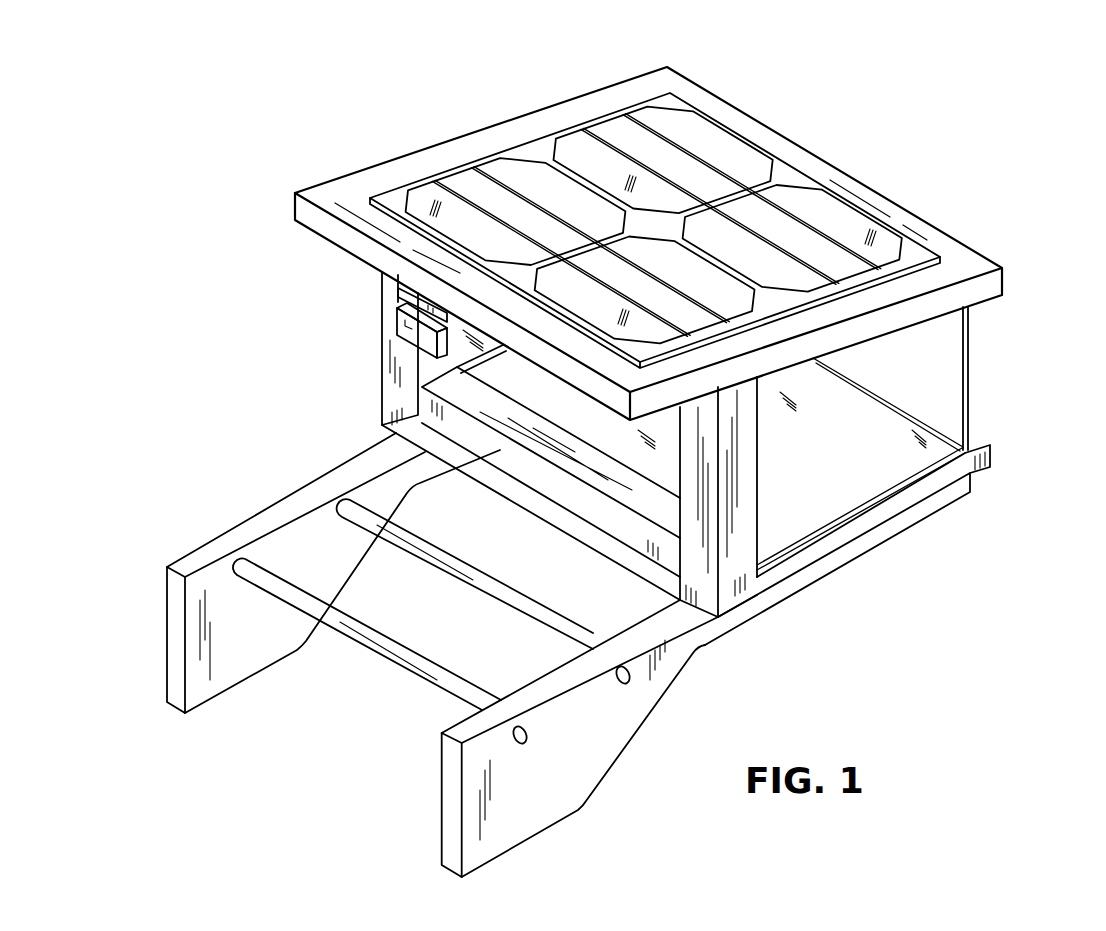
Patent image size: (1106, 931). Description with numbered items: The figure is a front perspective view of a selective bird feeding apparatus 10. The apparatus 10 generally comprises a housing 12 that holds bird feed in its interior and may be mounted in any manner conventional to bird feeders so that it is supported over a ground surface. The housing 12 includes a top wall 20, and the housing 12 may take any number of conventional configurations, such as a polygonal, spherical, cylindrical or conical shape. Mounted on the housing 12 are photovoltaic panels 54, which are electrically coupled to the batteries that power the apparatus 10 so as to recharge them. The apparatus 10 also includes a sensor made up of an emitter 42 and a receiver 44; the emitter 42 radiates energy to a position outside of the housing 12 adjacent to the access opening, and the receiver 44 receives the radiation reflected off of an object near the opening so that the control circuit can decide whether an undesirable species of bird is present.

The selective bird feeding apparatus 10 is at (946, 140).
The housing 12 is at (992, 448).
The top wall 20 is at (977, 261).
The emitter 42 is at (400, 288).
The receiver 44 is at (397, 327).
The photovoltaic panels 54 is at (837, 212).